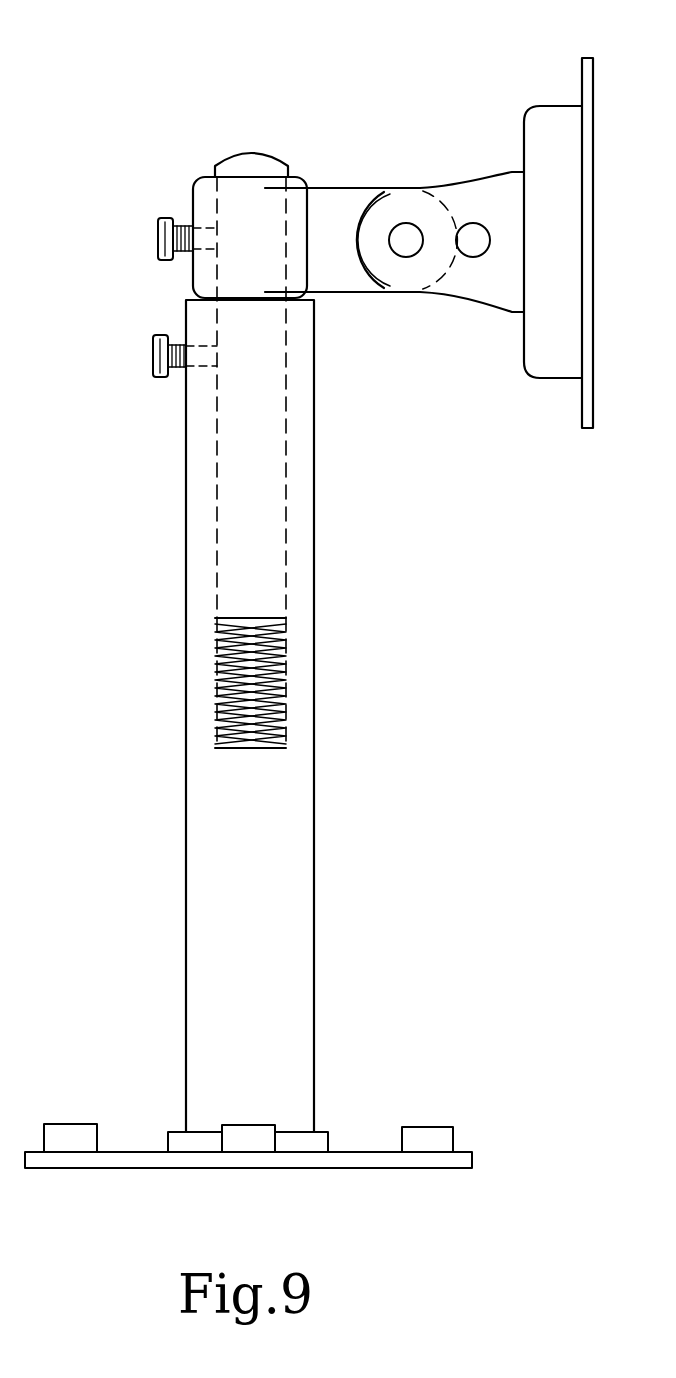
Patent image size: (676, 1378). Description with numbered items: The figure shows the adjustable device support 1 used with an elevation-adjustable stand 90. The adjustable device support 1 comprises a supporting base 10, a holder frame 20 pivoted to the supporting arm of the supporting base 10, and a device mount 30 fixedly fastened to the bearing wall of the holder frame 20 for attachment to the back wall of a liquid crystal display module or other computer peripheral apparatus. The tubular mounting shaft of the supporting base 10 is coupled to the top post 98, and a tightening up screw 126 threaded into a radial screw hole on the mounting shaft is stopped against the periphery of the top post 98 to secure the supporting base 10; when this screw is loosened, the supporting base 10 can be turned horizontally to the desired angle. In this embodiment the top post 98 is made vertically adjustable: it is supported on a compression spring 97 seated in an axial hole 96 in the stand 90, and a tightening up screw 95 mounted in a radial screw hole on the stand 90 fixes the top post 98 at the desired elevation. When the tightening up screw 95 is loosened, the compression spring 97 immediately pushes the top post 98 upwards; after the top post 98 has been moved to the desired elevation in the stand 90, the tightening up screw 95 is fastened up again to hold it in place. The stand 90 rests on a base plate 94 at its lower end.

The adjustable device support 1 is at (438, 133).
The supporting base 10 is at (342, 178).
The holder frame 20 is at (472, 303).
The device mount 30 is at (582, 202).
The stand 90 is at (205, 574).
The base plate 94 is at (472, 1152).
The tightening up screw 95 is at (153, 357).
The axial hole 96 is at (285, 635).
The compression spring 97 is at (272, 682).
The top post 98 is at (250, 160).
The tightening up screw 126 is at (163, 217).